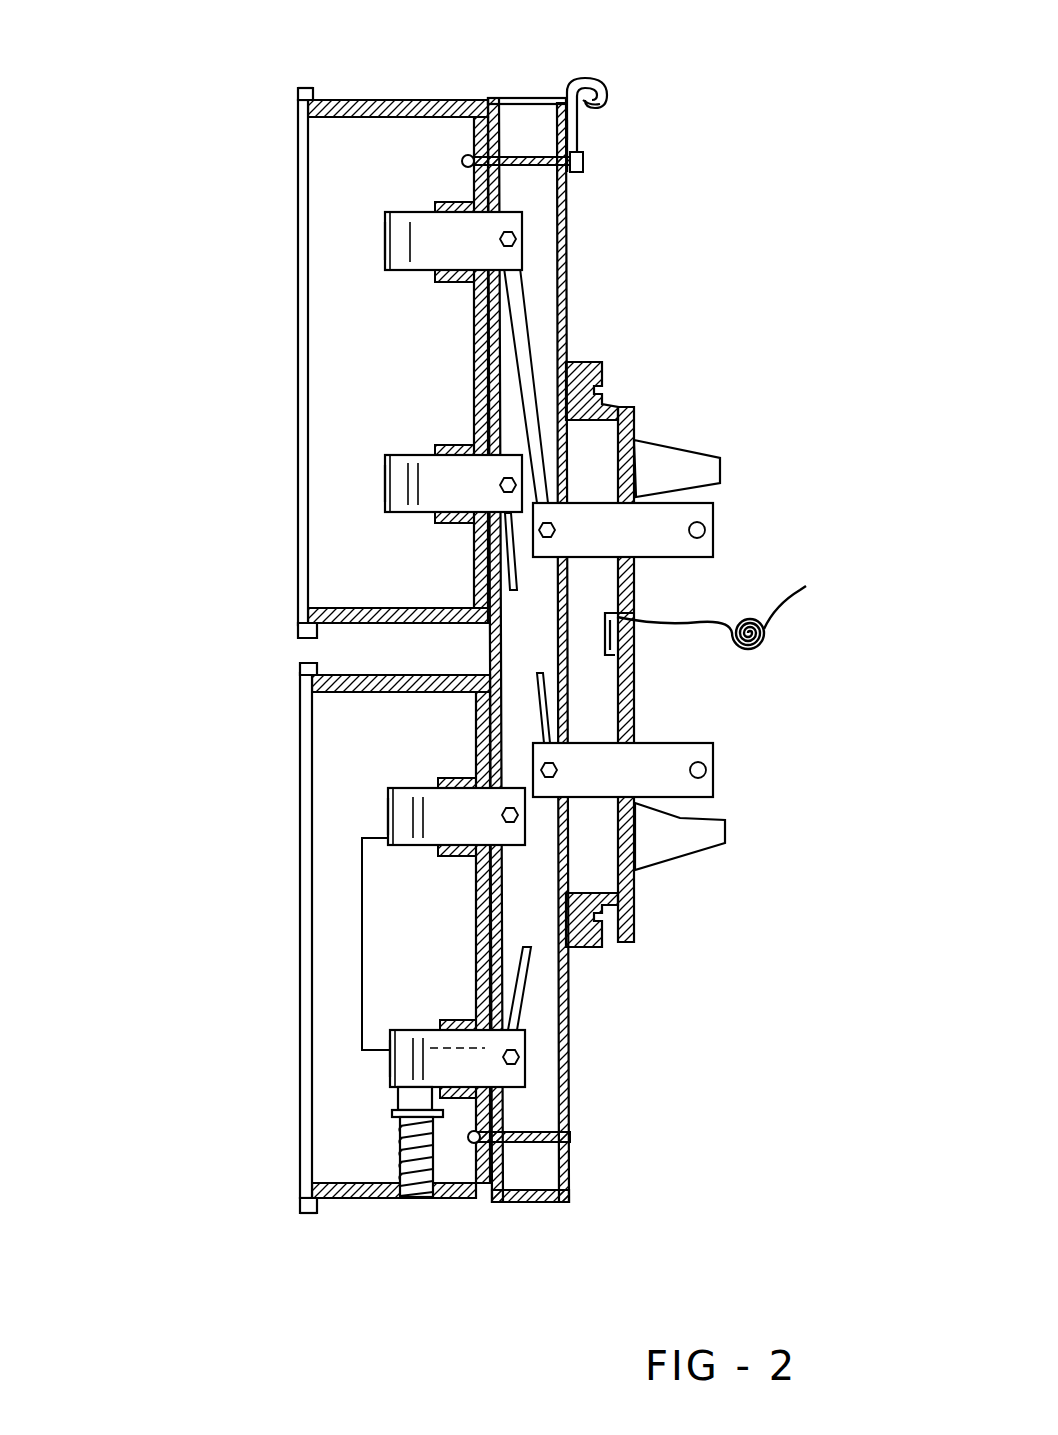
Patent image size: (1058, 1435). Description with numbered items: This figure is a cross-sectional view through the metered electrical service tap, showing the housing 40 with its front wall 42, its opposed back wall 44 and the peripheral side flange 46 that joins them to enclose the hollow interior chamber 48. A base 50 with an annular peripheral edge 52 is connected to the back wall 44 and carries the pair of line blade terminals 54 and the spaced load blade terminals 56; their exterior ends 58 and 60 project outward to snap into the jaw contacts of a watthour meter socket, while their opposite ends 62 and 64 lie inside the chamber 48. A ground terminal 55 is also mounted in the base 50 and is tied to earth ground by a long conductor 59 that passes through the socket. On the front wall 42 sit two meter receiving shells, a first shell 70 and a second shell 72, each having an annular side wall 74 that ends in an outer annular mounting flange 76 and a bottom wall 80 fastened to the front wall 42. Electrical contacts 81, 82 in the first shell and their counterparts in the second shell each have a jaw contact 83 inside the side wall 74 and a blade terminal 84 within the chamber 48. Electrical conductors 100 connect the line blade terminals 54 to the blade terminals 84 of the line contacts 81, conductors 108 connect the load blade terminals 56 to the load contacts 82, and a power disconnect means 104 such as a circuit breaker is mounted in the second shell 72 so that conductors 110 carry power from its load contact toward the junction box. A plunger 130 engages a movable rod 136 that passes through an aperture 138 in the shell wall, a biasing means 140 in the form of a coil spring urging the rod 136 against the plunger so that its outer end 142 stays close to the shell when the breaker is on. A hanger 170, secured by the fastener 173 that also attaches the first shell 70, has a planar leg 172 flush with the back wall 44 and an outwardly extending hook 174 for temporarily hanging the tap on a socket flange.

The housing 40 is at (570, 1085).
The front wall 42 is at (487, 100).
The back wall 44 is at (567, 213).
The peripheral side flange 46 is at (510, 98).
The interior chamber 48 is at (558, 1124).
The base 50 is at (617, 380).
The annular peripheral edge 52 is at (580, 360).
The line blade terminal 54 is at (660, 503).
The ground terminal 55 is at (620, 650).
The load blade terminal 56 is at (670, 747).
The exterior end of line blade terminal 58 is at (713, 517).
The long conductor 59 is at (727, 603).
The exterior end of load blade terminal 60 is at (713, 770).
The opposite end of line blade terminal 62 is at (530, 537).
The opposite end of load blade terminal 64 is at (537, 760).
The first shell 70 is at (303, 82).
The second shell 72 is at (340, 1212).
The annular side wall 74 is at (363, 100).
The outer annular mounting flange 76 is at (298, 97).
The bottom wall 80 is at (468, 160).
The electrical contact 81 is at (385, 222).
The electrical contact 82 is at (383, 448).
The jaw contact 83 is at (395, 240).
The blade terminal 84 is at (516, 238).
The electrical conductor 100 is at (530, 322).
The power disconnect means 104 is at (377, 893).
The electrical conductor 108 is at (510, 578).
The electrical conductor 110 is at (527, 985).
The plunger 130 is at (395, 1095).
The movable rod 136 is at (405, 1158).
The aperture 138 is at (415, 1200).
The biasing means 140 is at (405, 1140).
The outer end of rod 142 is at (410, 1200).
The hanger 170 is at (579, 130).
The planar leg 172 is at (574, 144).
The fastener 173 is at (540, 98).
The hook 174 is at (585, 106).